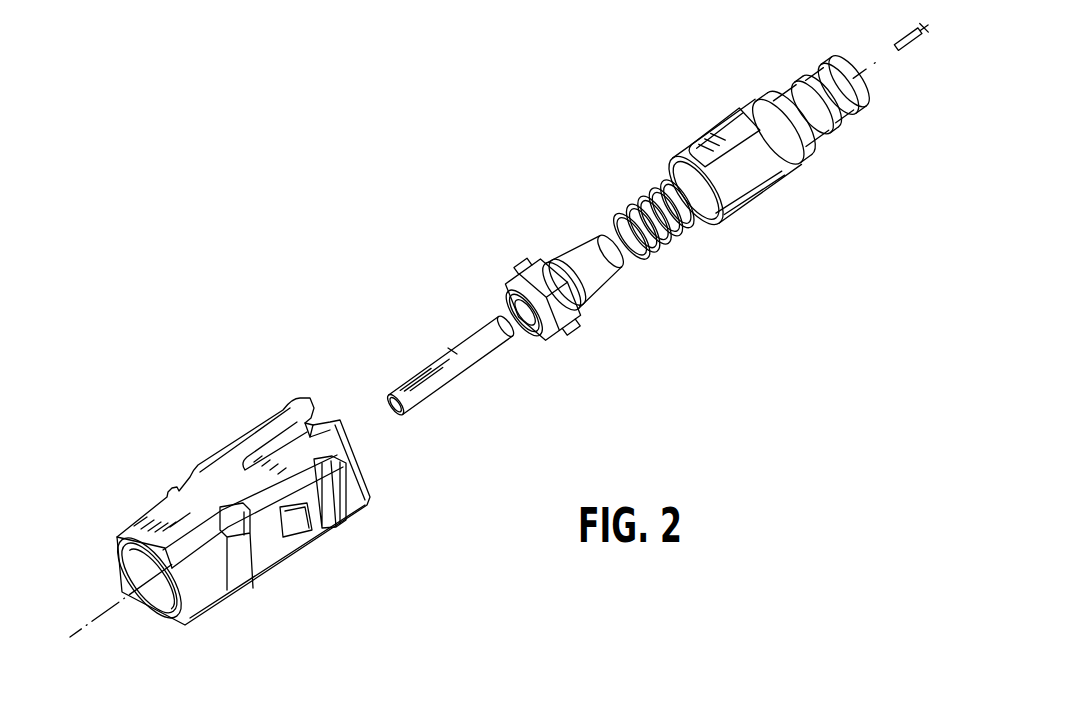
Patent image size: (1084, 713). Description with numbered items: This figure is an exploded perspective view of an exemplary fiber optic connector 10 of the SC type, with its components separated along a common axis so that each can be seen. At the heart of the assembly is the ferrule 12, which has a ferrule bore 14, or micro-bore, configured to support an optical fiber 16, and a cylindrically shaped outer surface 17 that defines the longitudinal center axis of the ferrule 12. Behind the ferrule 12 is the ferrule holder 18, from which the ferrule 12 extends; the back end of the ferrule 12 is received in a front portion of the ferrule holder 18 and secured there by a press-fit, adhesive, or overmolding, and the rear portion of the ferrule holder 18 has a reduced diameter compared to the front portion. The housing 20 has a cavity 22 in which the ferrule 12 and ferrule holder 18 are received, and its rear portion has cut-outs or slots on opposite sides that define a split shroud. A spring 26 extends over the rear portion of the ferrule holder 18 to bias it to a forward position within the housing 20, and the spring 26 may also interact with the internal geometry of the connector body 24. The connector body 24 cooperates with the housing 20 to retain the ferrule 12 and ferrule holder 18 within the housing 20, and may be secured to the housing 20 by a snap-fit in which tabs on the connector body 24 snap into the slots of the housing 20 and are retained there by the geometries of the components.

The fiber optic connector 10 is at (286, 129).
The ferrule 12 is at (442, 346).
The ferrule bore 14 is at (389, 407).
The optical fiber 16 is at (906, 38).
The cylindrically shaped outer surface 17 is at (453, 356).
The ferrule holder 18 is at (549, 262).
The housing 20 is at (220, 453).
The cavity 22 is at (164, 600).
The connector body 24 is at (717, 123).
The spring 26 is at (640, 205).